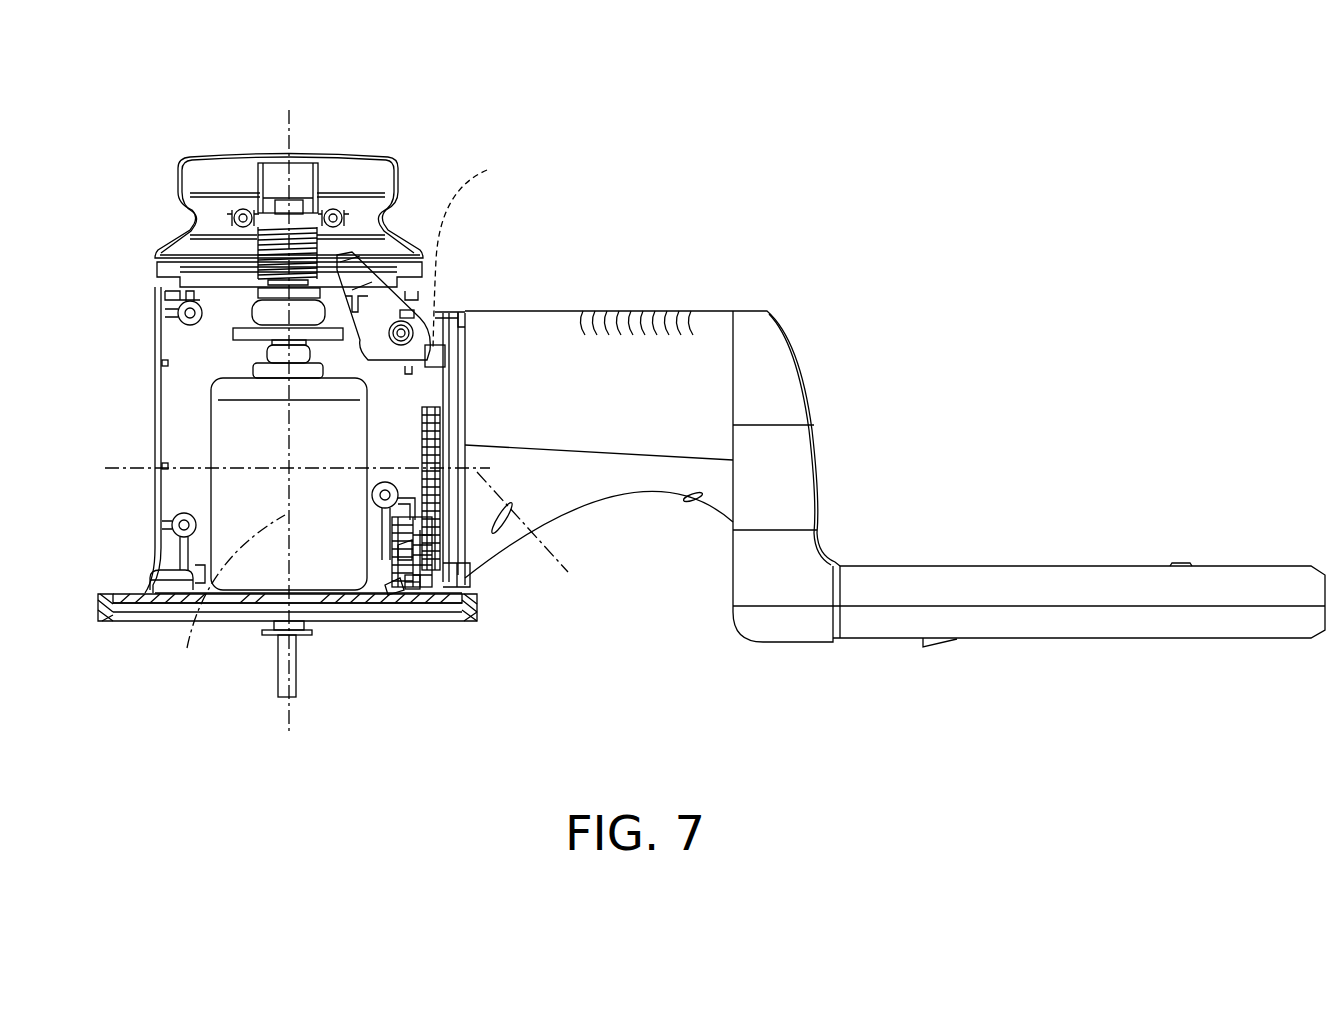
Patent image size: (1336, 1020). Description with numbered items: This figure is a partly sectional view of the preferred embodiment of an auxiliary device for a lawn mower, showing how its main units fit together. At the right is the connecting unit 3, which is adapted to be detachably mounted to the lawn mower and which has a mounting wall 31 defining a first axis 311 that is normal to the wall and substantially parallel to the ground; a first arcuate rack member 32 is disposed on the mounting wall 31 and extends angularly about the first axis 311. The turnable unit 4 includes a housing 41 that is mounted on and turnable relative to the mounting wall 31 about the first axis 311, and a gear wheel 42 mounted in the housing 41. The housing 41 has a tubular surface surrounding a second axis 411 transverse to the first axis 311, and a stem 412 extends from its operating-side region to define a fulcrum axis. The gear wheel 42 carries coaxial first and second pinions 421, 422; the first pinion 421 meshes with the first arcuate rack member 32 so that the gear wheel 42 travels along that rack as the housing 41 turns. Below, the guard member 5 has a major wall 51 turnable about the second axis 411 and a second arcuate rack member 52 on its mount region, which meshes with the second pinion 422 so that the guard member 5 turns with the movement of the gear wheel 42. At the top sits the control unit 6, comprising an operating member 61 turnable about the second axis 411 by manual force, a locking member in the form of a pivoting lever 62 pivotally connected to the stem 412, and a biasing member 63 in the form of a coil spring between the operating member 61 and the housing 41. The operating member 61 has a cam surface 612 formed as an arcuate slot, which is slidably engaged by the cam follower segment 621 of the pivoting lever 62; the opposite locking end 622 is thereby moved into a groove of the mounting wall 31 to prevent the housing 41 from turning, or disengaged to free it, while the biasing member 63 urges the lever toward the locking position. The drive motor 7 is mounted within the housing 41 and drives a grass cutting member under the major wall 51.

The connecting unit 3 is at (795, 318).
The mounting wall 31 is at (450, 410).
The first axis 311 is at (551, 531).
The first arcuate rack member 32 is at (430, 488).
The turnable unit 4 is at (135, 388).
The housing 41 is at (150, 437).
The second axis 411 is at (207, 595).
The stem 412 is at (360, 298).
The gear wheel 42 is at (466, 625).
The first pinion 421 is at (422, 574).
The second pinion 422 is at (403, 587).
The guard member 5 is at (244, 642).
The major wall 51 is at (125, 593).
The second arcuate rack member 52 is at (390, 592).
The control unit 6 is at (269, 173).
The operating member 61 is at (186, 158).
The cam surface 612 is at (340, 228).
The pivoting lever 62 is at (405, 203).
The cam follower segment 621 is at (352, 262).
The locking end 622 is at (482, 255).
The biasing member 63 is at (276, 230).
The drive motor 7 is at (205, 483).